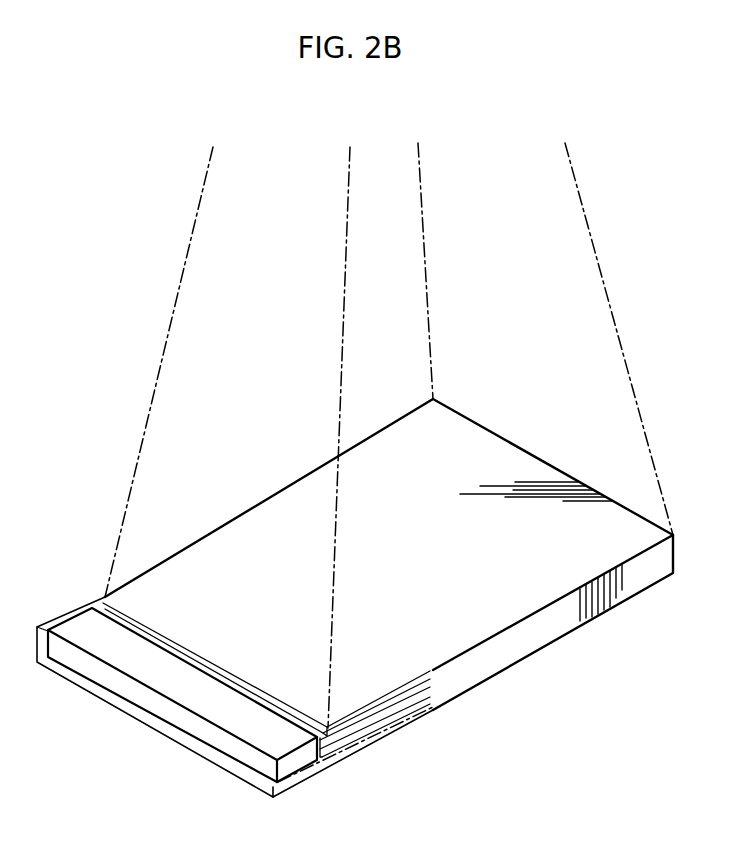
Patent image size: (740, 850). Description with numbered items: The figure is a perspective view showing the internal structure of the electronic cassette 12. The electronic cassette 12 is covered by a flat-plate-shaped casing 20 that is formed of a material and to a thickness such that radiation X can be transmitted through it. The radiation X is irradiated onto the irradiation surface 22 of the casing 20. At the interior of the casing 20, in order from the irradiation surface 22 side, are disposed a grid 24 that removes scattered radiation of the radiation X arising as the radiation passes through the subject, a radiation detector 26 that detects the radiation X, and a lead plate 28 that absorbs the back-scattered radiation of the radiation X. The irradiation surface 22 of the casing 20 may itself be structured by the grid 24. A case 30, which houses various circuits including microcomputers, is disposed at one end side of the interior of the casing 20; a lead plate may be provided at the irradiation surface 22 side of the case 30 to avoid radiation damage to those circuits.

The radiation X is at (163, 345).
The electronic cassette 12 is at (358, 588).
The casing 20 is at (518, 645).
The irradiation surface 22 is at (530, 467).
The grid 24 is at (382, 657).
The radiation detector 26 is at (400, 704).
The lead plate 28 is at (374, 737).
The case 30 is at (293, 766).